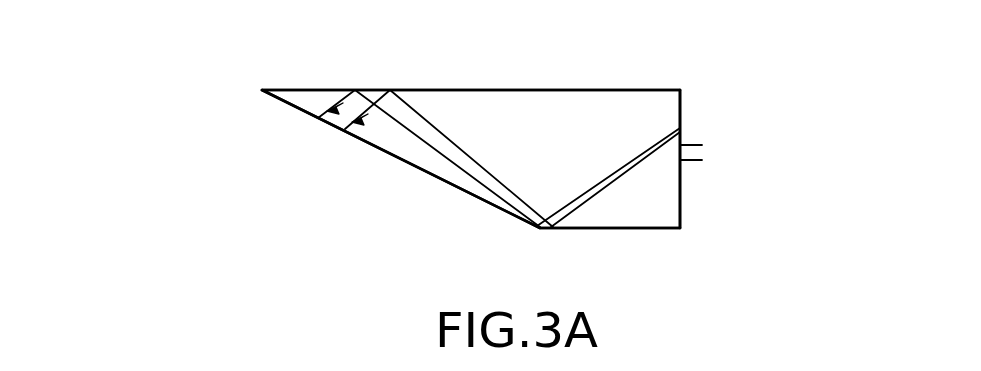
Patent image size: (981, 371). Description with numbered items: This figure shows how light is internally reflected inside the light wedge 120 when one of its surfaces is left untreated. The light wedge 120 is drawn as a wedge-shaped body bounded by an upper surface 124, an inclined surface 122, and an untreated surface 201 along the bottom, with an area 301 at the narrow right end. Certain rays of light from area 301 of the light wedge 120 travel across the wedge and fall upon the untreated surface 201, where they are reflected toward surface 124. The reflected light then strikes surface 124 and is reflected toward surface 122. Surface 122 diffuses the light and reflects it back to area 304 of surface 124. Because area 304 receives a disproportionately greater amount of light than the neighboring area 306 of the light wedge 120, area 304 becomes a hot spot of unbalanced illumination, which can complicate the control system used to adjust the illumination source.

The light wedge 120 is at (200, 73).
The surface 122 is at (442, 181).
The surface 124 is at (611, 90).
The untreated surface 201 is at (632, 228).
The area 301 is at (681, 130).
The area 304 is at (384, 74).
The area 306 is at (523, 74).